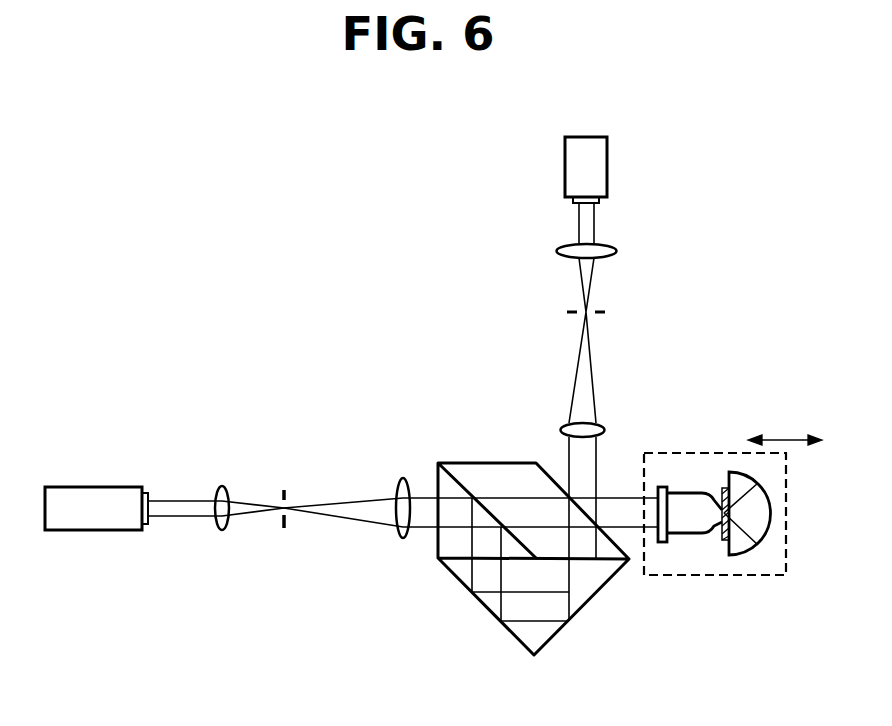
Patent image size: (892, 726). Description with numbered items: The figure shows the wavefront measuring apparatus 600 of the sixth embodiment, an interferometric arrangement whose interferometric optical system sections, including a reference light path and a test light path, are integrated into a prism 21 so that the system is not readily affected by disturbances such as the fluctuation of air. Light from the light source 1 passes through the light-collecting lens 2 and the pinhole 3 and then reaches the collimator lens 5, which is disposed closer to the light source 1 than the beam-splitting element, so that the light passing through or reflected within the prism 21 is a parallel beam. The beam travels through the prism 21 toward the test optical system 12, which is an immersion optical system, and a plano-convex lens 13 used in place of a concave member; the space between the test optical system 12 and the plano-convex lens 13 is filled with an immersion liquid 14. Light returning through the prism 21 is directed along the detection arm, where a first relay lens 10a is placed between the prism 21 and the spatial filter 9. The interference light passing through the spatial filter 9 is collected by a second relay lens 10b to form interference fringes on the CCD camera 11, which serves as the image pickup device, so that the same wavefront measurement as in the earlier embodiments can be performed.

The wavefront measuring apparatus 600 is at (335, 323).
The light source 1 is at (105, 497).
The light-collecting lens 2 is at (222, 486).
The pinhole 3 is at (286, 484).
The collimator lens 5 is at (403, 478).
The prism 21 is at (463, 585).
The test optical system 12 is at (690, 523).
The plano-convex lens 13 is at (753, 553).
The immersion liquid 14 is at (721, 488).
The CCD camera 11 is at (600, 169).
The second relay lens 10b is at (557, 251).
The spatial filter 9 is at (599, 312).
The first relay lens 10a is at (561, 430).